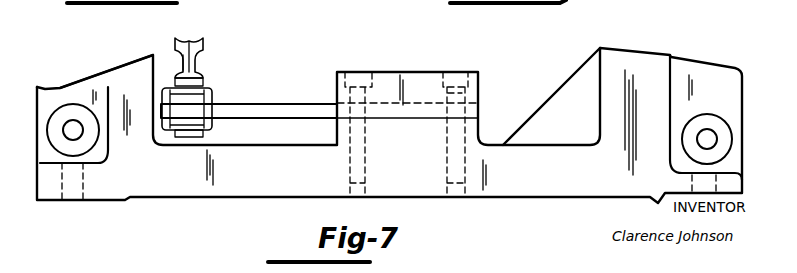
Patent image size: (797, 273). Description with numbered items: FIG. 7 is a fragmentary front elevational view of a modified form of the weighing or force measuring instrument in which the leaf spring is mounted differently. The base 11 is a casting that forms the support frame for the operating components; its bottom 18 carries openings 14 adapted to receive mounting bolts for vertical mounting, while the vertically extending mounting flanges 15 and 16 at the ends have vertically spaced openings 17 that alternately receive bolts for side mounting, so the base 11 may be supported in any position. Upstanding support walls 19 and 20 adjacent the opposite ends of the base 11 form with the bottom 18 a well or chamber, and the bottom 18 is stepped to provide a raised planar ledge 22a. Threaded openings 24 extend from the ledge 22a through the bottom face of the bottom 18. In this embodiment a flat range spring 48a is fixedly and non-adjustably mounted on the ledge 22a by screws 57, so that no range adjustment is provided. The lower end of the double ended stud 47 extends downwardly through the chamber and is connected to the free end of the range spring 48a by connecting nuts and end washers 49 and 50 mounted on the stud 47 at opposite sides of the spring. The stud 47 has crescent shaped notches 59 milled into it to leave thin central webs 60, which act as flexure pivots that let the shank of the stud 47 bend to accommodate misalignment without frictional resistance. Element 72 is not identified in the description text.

The base 11 is at (174, 203).
The openings 14 is at (83, 185).
The mounting flange 15 is at (45, 88).
The mounting flange 16 is at (728, 72).
The openings 17 is at (713, 138).
The bottom wall 18 is at (252, 204).
The support wall 19 is at (127, 68).
The support wall 20 is at (657, 58).
The ledge 22a is at (337, 142).
The threaded openings 24 is at (447, 190).
The double ended stud 47 is at (200, 45).
The range spring 48a is at (270, 104).
The connecting nut and end washer 49 is at (212, 100).
The connecting nut and end washer 50 is at (212, 125).
The screws 57 is at (352, 72).
The notches 59 is at (200, 68).
The central webs 60 is at (186, 60).
The center block 72 is at (407, 72).